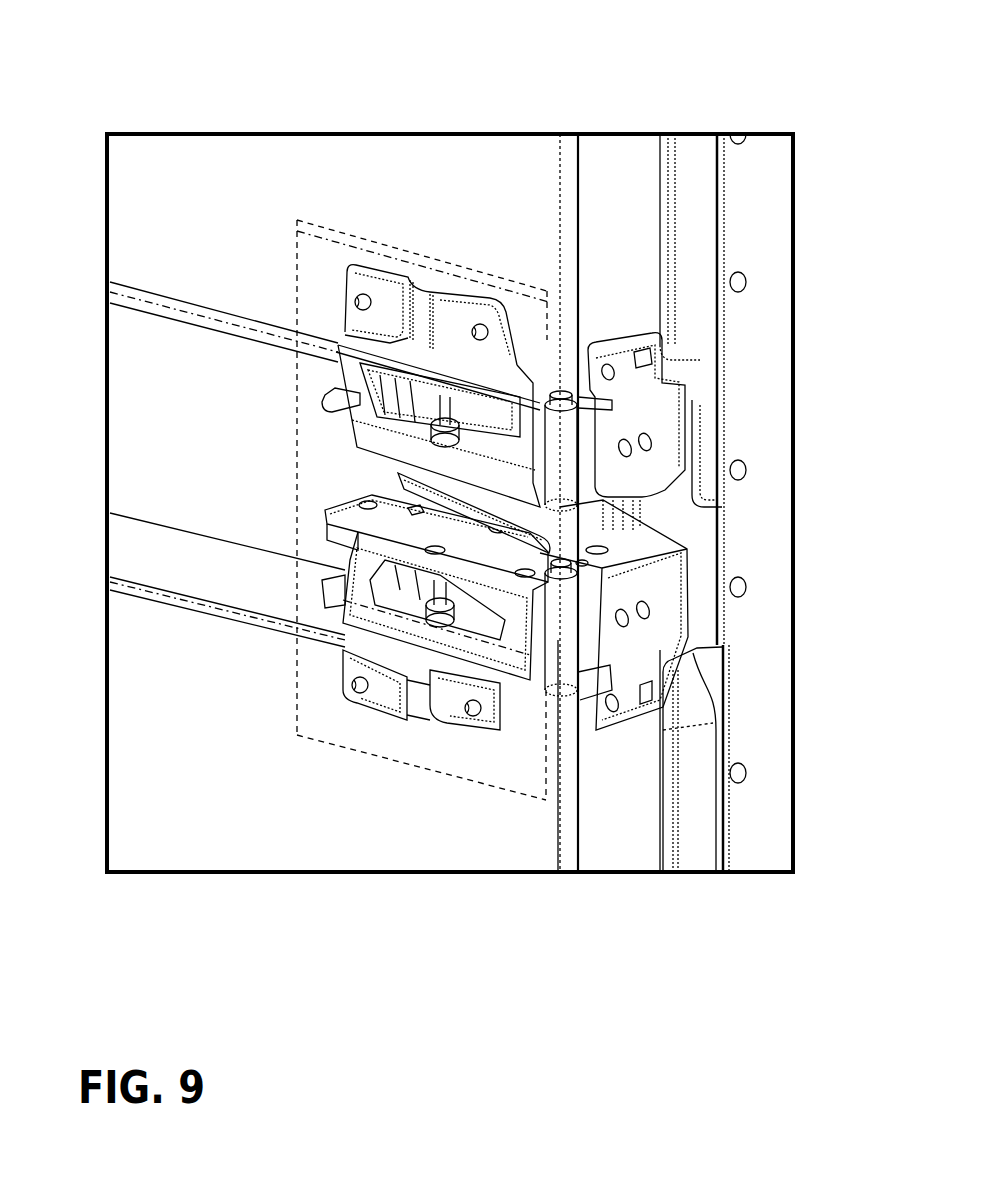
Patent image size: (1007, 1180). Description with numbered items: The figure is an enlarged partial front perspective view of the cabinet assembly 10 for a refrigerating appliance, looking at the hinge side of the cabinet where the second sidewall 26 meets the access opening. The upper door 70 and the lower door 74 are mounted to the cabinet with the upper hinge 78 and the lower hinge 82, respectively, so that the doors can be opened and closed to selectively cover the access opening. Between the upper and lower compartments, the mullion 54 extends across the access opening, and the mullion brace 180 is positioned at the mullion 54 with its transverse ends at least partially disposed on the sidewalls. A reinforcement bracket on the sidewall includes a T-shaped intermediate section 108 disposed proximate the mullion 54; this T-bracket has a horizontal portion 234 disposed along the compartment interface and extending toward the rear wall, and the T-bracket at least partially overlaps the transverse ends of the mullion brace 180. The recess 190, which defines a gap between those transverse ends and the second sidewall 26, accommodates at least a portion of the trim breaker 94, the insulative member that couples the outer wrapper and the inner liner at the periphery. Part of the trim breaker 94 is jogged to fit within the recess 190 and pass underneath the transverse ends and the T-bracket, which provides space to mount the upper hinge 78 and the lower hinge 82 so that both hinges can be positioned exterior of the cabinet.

The cabinet assembly 10 is at (822, 204).
The second sidewall 26 is at (803, 556).
The mullion 54 is at (176, 368).
The upper door 70 is at (240, 222).
The lower door 74 is at (342, 802).
The upper hinge 78 is at (640, 408).
The lower hinge 82 is at (628, 655).
The trim breaker 94 is at (693, 275).
The intermediate section 108 is at (720, 527).
The mullion brace 180 is at (212, 438).
The recess 190 is at (705, 413).
The horizontal portion 234 is at (763, 503).